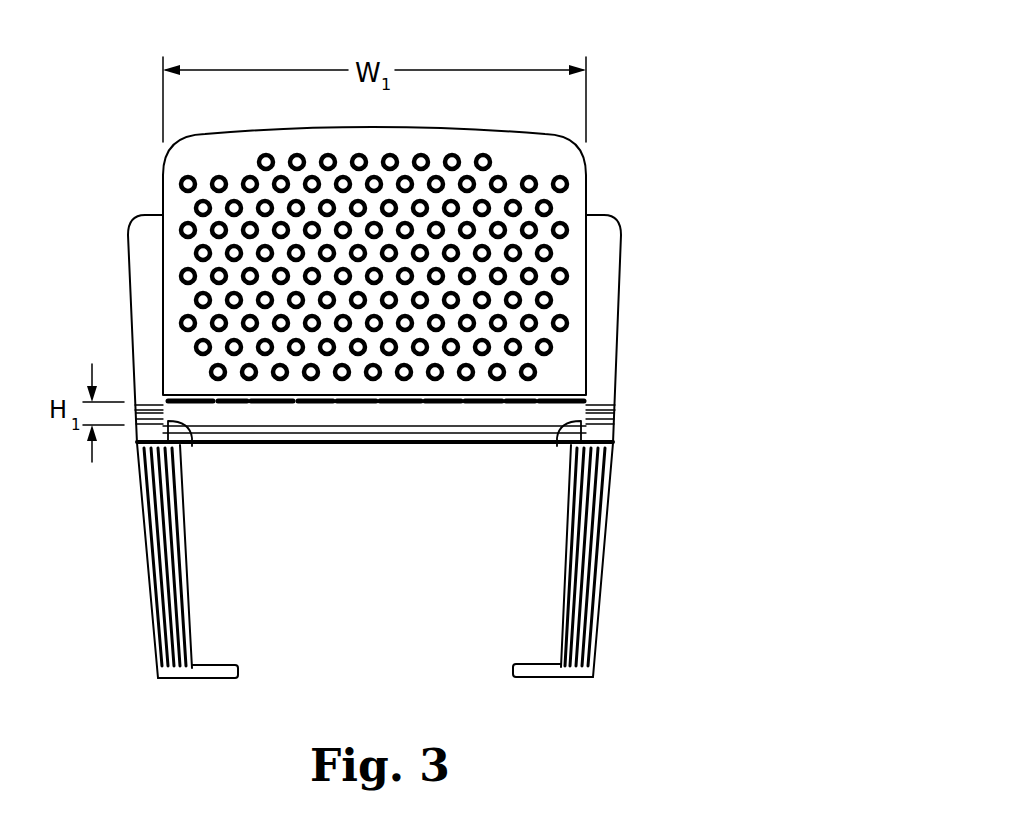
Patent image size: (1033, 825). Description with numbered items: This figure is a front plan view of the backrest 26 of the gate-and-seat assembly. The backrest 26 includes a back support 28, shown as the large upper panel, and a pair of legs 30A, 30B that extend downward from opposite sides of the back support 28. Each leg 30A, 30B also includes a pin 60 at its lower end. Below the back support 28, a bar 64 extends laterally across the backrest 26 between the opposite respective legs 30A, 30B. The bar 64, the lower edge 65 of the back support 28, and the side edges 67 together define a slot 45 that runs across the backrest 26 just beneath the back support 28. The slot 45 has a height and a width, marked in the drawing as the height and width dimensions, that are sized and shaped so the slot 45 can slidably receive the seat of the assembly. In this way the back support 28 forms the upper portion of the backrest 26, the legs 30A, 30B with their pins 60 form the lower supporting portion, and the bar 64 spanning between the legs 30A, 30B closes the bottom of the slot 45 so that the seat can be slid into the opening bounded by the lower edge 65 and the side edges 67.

The backrest 26 is at (598, 165).
The back support 28 is at (573, 207).
The slot 45 is at (556, 392).
The bar 64 is at (285, 434).
The lower edge 65 is at (398, 438).
The side edges 67 is at (196, 440).
The leg 30A is at (165, 578).
The leg 30B is at (600, 537).
The pin 60 is at (205, 677).